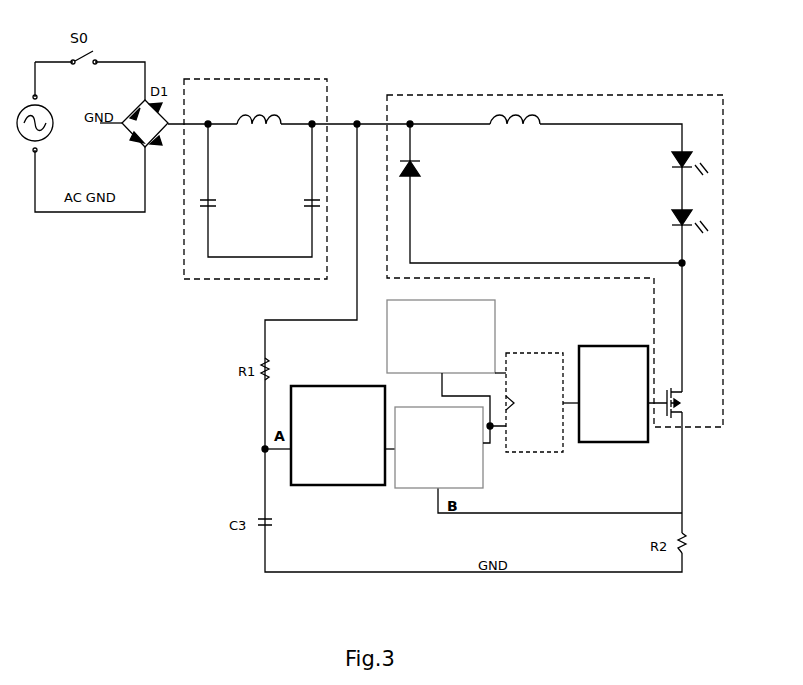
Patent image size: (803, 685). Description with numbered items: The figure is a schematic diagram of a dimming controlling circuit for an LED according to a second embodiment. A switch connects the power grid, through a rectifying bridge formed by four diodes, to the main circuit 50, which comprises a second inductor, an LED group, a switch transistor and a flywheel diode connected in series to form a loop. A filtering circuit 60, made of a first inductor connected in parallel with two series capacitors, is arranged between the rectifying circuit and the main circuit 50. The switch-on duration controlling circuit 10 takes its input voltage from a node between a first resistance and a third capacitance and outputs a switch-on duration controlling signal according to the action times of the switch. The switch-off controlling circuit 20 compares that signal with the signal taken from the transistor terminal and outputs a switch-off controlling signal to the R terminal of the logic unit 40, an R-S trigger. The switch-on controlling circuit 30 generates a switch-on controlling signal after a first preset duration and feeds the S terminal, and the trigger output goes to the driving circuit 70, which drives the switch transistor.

The switch-on duration controlling circuit 10 is at (326, 485).
The switch-off controlling circuit 20 is at (420, 488).
The switch-on controlling circuit 30 is at (387, 354).
The logic unit 40 is at (548, 452).
The main circuit 50 is at (407, 95).
The filtering circuit 60 is at (230, 279).
The driving circuit 70 is at (641, 346).